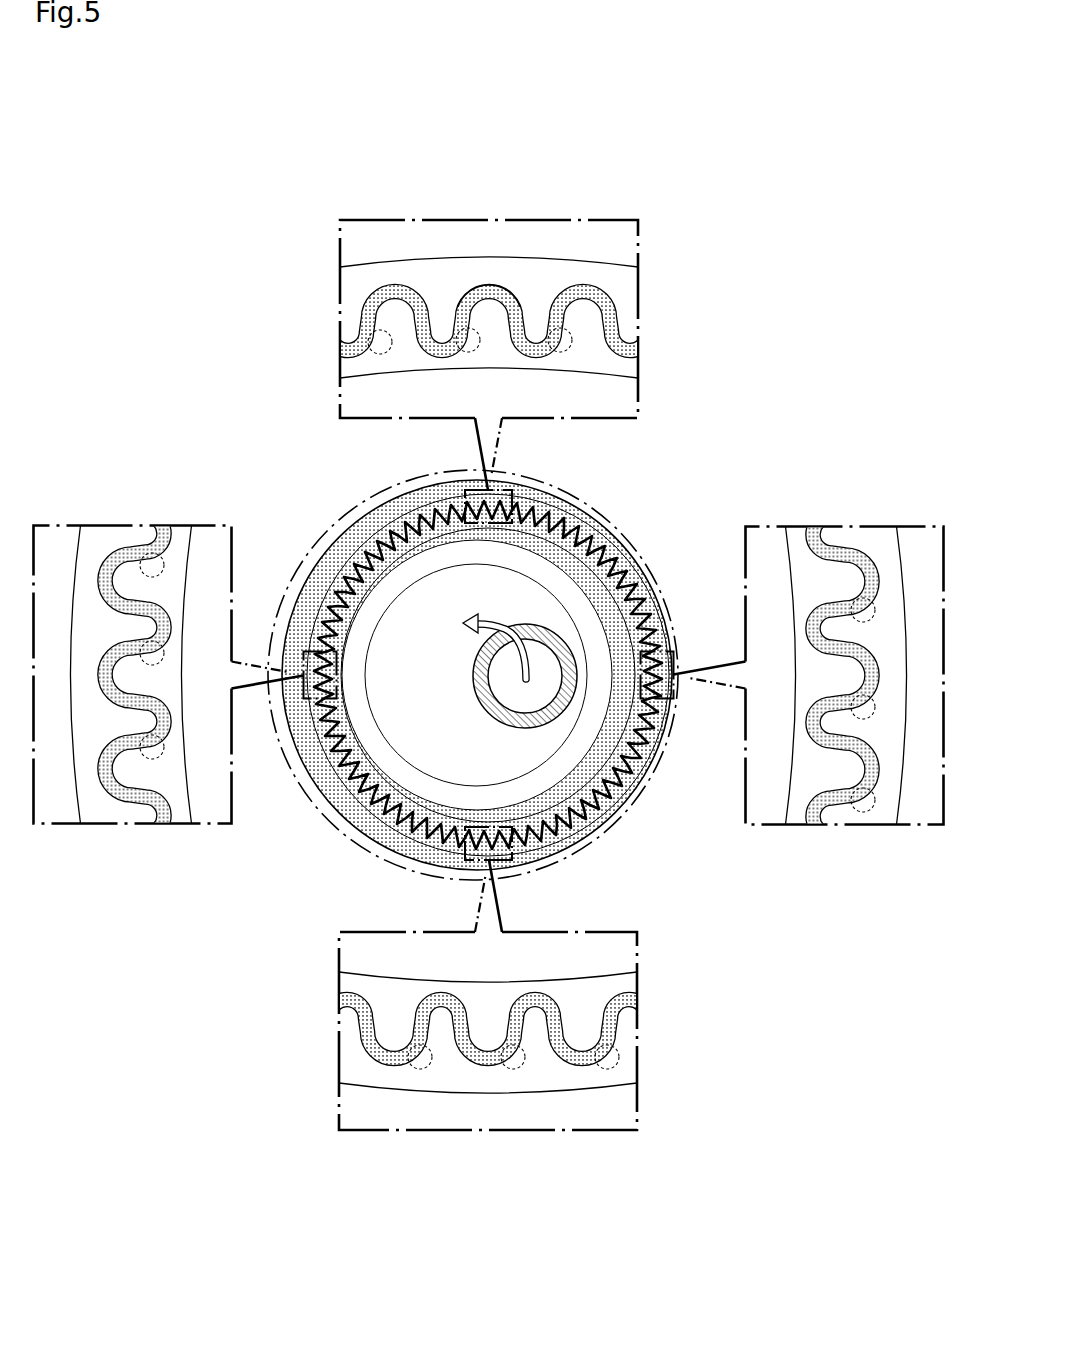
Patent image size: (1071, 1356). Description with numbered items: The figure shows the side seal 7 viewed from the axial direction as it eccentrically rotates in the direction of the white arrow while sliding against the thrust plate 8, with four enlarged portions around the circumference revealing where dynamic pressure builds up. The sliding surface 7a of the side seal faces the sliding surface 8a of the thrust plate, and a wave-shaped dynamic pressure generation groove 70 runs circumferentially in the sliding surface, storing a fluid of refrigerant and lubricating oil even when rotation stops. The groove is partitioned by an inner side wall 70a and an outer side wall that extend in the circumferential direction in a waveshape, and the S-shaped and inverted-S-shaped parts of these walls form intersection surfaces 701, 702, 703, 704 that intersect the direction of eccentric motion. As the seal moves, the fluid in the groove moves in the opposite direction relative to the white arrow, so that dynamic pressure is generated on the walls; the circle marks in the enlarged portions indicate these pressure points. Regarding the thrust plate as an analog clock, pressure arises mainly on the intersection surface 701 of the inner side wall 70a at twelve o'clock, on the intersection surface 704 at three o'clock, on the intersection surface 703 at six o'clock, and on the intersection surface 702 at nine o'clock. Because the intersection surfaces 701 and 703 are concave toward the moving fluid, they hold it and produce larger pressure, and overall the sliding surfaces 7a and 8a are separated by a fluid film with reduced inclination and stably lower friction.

The side seal 7 is at (342, 797).
The sliding surface 7a is at (596, 524).
The thrust plate 8 is at (313, 565).
The sliding surface 8a is at (344, 518).
The dynamic pressure generation groove 70 is at (517, 362).
The inner side wall 70a is at (493, 288).
The intersection surface 701 is at (554, 297).
The intersection surface 702 is at (127, 637).
The intersection surface 703 is at (520, 1025).
The intersection surface 704 is at (841, 600).